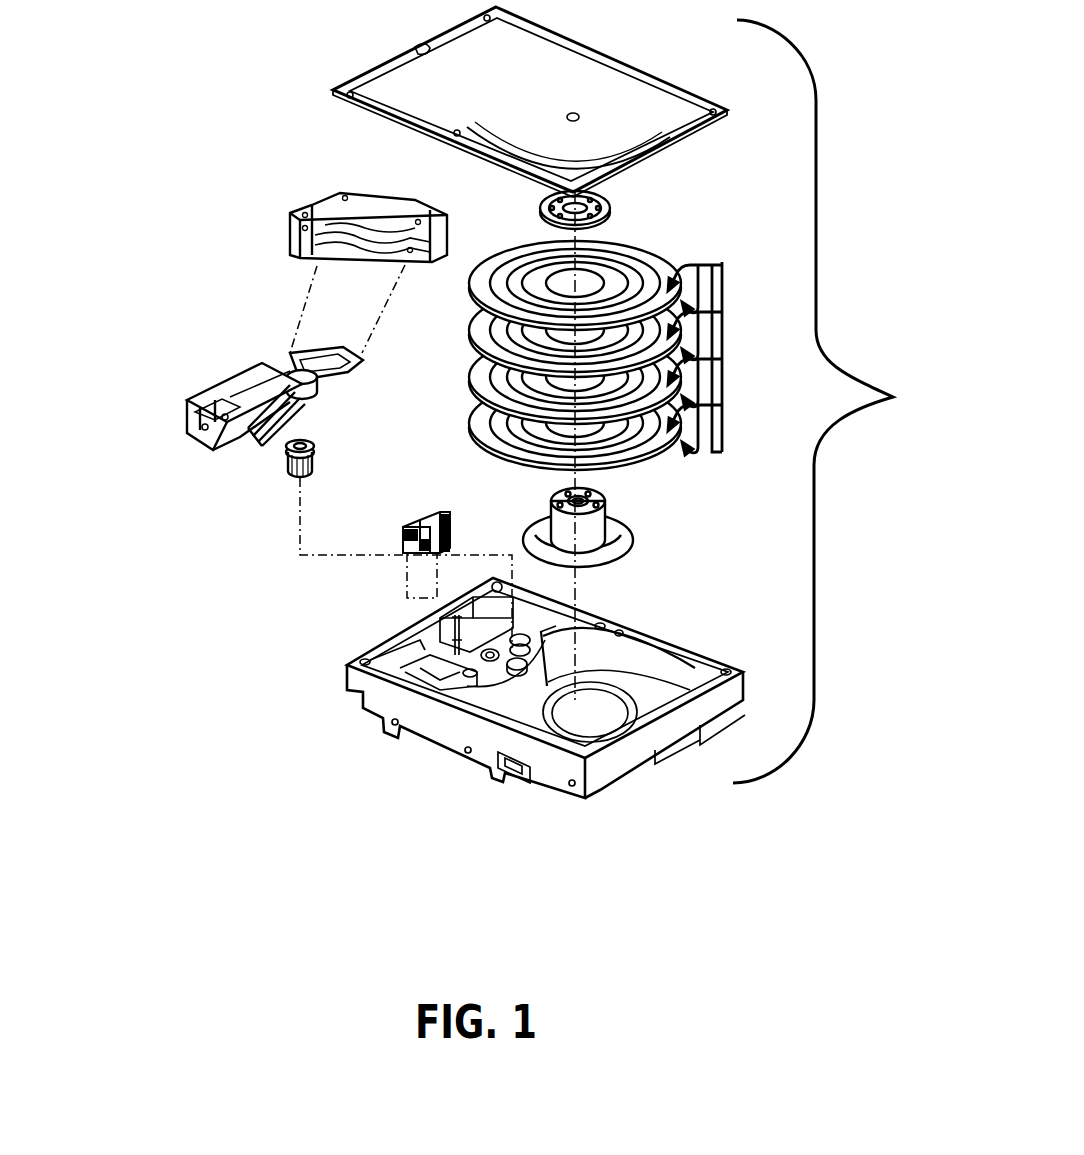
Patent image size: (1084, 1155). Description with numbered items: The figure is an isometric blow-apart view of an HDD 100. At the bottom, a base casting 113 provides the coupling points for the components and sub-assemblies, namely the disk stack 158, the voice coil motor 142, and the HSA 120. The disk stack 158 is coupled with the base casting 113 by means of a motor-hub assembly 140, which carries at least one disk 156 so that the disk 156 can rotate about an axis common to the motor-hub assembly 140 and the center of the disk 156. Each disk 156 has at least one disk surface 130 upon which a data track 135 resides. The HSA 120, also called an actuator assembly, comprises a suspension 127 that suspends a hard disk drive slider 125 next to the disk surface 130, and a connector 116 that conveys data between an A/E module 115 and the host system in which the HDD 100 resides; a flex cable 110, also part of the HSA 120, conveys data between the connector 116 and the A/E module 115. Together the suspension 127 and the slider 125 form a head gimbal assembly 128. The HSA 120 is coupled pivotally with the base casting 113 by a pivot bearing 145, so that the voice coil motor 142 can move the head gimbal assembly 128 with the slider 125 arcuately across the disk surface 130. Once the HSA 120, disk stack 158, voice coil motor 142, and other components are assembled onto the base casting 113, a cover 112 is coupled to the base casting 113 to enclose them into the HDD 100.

The HDD 100 is at (893, 397).
The flex cable 110 is at (265, 383).
The cover 112 is at (620, 106).
The base casting 113 is at (363, 683).
The A/E module 115 is at (282, 390).
The connector 116 is at (223, 420).
The HSA 120 is at (221, 406).
The hard disk drive slider 125 is at (262, 430).
The suspension 127 is at (222, 415).
The head gimbal assembly 128 is at (280, 434).
The disk surface 130 is at (737, 470).
The data track 135 is at (528, 256).
The motor-hub assembly 140 is at (625, 530).
The voice coil motor 142 is at (290, 203).
The pivot bearing 145 is at (298, 479).
The disk 156 is at (472, 278).
The disk stack 158 is at (581, 326).